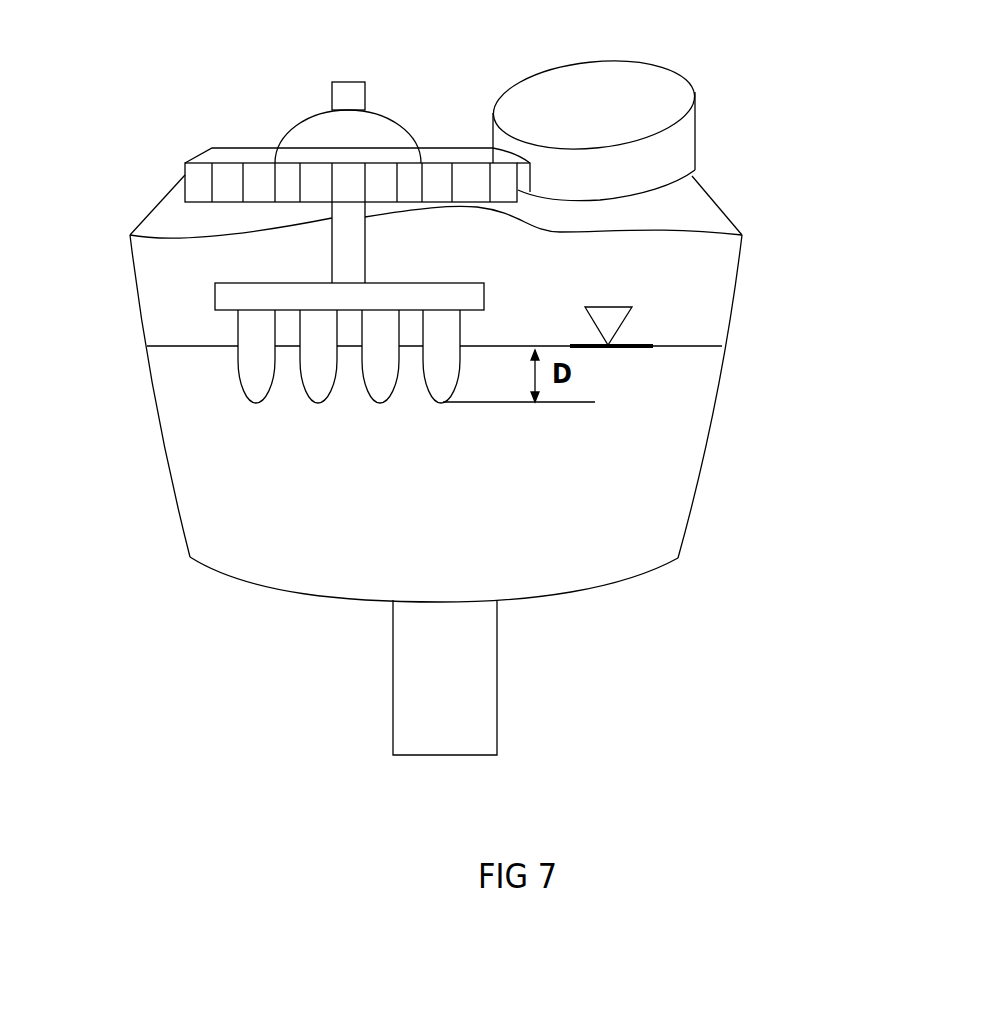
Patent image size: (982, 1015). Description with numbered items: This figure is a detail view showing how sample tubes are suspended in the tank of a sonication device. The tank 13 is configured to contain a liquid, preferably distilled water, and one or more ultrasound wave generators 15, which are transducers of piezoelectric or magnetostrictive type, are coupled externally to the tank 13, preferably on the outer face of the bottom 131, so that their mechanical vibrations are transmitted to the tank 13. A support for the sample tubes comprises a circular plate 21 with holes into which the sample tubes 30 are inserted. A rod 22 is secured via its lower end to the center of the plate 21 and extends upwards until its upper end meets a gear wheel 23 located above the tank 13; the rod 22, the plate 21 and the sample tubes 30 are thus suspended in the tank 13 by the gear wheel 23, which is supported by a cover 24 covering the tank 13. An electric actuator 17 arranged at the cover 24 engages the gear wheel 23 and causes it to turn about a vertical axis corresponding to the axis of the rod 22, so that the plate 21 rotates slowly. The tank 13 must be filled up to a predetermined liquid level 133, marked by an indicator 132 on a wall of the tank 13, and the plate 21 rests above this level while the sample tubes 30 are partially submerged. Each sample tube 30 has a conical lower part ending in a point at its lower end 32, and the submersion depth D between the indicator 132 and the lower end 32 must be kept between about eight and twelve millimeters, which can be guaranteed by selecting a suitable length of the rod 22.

The tank 13 is at (693, 512).
The bottom 131 is at (575, 590).
The ultrasound wave generator 15 is at (497, 727).
The electric actuator 17 is at (695, 125).
The plate 21 is at (238, 283).
The rod 22 is at (333, 243).
The gear wheel 23 is at (230, 163).
The cover 24 is at (688, 230).
The sample tube 30 is at (240, 378).
The lower end 32 is at (257, 403).
The indicator 132 is at (610, 305).
The liquid level 133 is at (638, 345).